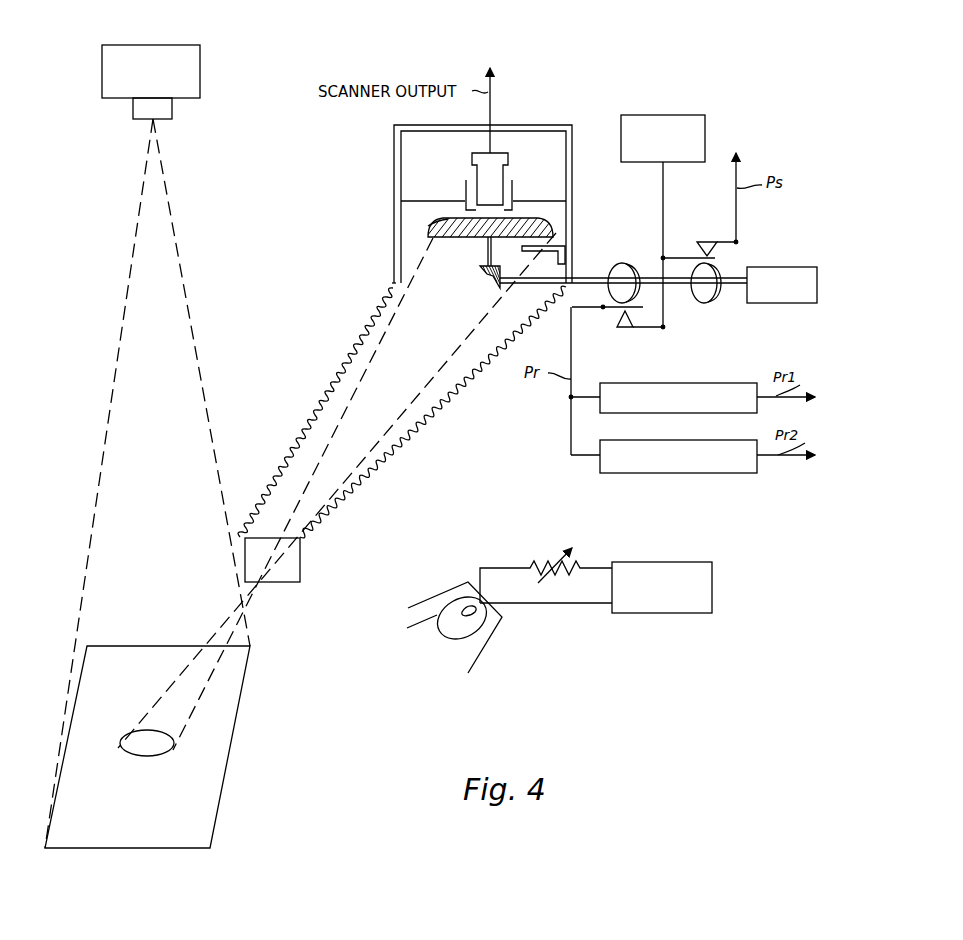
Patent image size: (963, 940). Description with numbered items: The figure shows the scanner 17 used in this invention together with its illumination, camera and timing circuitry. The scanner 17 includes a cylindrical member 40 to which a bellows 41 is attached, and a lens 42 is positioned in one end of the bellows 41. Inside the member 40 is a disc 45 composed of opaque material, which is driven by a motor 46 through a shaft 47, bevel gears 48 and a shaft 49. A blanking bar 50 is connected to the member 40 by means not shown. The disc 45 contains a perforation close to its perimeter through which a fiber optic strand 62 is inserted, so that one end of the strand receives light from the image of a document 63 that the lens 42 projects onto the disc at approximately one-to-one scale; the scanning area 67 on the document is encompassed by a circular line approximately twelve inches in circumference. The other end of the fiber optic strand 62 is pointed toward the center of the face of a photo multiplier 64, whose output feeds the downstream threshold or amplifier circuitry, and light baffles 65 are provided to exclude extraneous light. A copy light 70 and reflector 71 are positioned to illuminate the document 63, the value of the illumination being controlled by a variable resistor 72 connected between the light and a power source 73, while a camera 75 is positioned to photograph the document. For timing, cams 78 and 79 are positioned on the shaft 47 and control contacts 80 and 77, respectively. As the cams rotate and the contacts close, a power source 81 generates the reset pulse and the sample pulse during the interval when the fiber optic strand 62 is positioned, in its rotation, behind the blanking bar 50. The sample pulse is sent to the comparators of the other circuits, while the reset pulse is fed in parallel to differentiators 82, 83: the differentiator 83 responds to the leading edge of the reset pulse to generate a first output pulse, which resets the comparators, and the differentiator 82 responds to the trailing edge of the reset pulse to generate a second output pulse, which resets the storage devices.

The scanner 17 is at (364, 159).
The cylindrical member 40 is at (393, 270).
The bellows 41 is at (345, 358).
The lens 42 is at (300, 567).
The disc 45 is at (460, 220).
The motor 46 is at (787, 267).
The shaft 47 is at (578, 278).
The bevel gears 48 is at (472, 295).
The shaft 49 is at (487, 255).
The blanking bar 50 is at (548, 250).
The fiber optic strand 62 is at (428, 225).
The document 63 is at (232, 752).
The photo multiplier 64 is at (472, 161).
The light baffles 65 is at (513, 192).
The scanning area 67 is at (172, 757).
The copy light 70 is at (445, 622).
The reflector 71 is at (428, 590).
The variable resistor 72 is at (550, 542).
The power source 73 is at (680, 613).
The camera 75 is at (200, 94).
The contacts 77 is at (612, 332).
The cam 78 is at (710, 303).
The cam 79 is at (628, 264).
The contacts 80 is at (694, 248).
The power source 81 is at (680, 115).
The differentiator 82 is at (672, 473).
The differentiator 83 is at (668, 384).